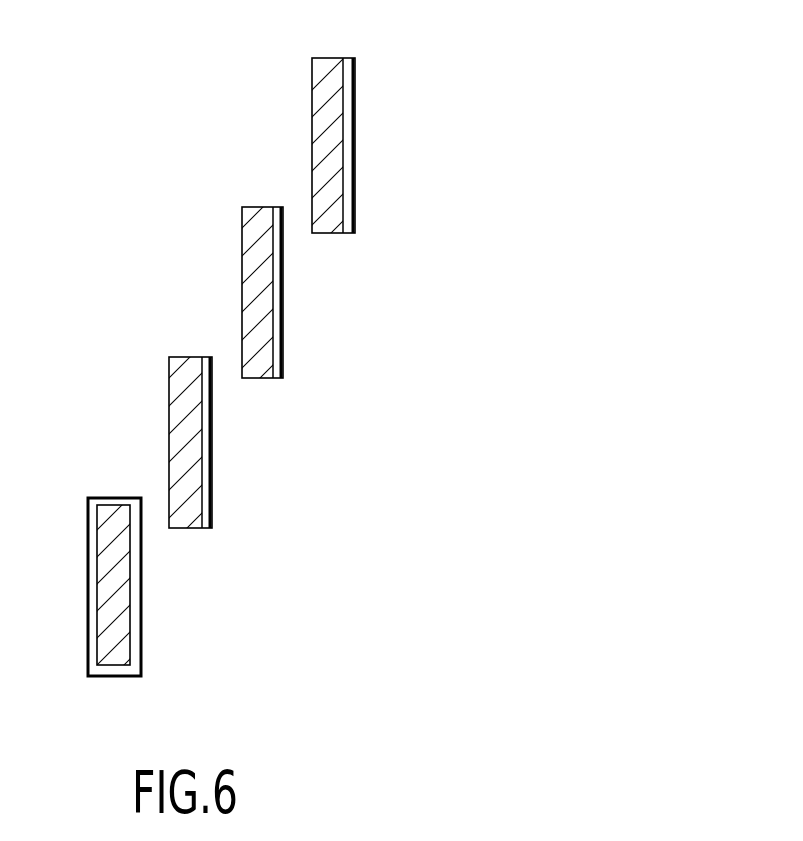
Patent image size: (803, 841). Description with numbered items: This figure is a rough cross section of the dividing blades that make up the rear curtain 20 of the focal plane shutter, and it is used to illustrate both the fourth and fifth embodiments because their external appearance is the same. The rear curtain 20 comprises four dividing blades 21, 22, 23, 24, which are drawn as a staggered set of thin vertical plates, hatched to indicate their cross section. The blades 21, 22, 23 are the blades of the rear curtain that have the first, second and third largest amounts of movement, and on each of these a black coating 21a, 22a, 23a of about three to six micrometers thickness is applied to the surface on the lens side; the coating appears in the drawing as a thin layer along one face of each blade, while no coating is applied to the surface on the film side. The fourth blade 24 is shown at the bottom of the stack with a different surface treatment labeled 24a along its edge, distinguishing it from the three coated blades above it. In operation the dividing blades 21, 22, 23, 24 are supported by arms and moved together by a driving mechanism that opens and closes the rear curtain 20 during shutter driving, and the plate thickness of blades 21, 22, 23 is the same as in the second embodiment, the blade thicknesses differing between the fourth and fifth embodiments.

The rear curtain 20 is at (99, 270).
The dividing blade 21 is at (397, 157).
The black coating 21a is at (346, 90).
The dividing blade 22 is at (320, 343).
The black coating 22a is at (276, 285).
The dividing blade 23 is at (250, 445).
The black coating 23a is at (205, 473).
The dividing blade 24 is at (177, 580).
The fourth layer coating surface 24a is at (133, 633).